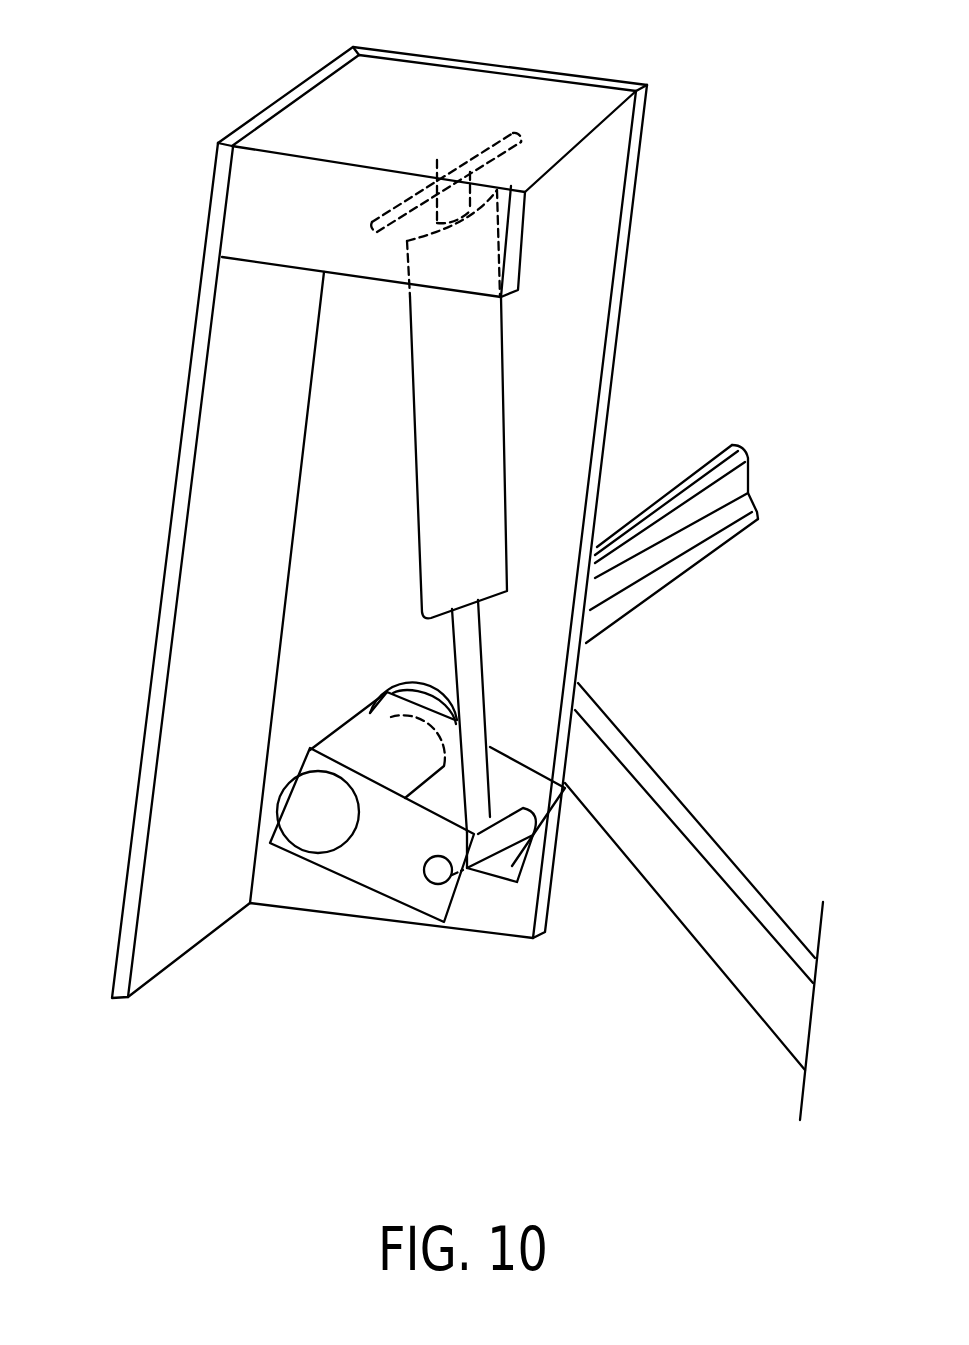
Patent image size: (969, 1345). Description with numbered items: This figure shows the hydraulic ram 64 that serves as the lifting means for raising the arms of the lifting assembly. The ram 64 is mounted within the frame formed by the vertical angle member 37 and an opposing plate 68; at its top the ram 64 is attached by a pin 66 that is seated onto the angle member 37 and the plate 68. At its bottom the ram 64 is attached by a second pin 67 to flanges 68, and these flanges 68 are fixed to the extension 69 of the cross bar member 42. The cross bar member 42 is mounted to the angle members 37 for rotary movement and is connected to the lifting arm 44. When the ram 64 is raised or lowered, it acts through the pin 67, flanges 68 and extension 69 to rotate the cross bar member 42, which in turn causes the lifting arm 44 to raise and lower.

The vertical angle member 37 is at (580, 245).
The plate / flange 68 is at (258, 198).
The pin 66 is at (506, 132).
The hydraulic ram 64 is at (478, 450).
The cross bar member 42 is at (692, 548).
The lifting arm 44 is at (688, 882).
The extension 69 is at (310, 825).
The pin 67 is at (508, 824).